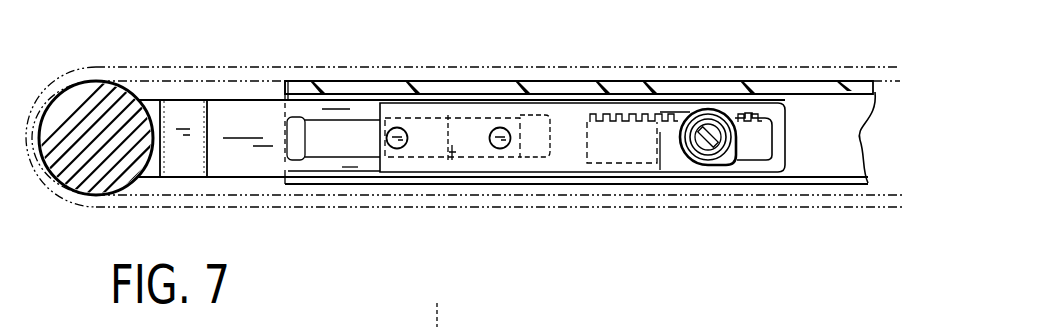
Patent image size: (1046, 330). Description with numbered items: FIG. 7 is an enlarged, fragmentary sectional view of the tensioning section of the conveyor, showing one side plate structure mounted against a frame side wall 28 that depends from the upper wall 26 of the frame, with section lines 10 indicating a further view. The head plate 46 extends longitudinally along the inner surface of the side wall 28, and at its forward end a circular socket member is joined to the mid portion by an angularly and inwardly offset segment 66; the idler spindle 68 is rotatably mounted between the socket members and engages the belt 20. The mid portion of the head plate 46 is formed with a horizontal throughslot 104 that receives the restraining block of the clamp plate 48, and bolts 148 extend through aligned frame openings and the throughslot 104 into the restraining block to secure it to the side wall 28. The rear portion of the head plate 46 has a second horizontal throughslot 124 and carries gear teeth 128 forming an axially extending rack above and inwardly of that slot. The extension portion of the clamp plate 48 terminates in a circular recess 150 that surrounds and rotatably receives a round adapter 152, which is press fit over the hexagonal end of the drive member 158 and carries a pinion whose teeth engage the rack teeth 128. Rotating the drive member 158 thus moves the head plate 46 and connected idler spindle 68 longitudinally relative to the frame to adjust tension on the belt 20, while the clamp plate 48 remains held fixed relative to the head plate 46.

The section line 10- 10 is at (428, 50).
The belt 20 is at (852, 65).
The upper wall 26 is at (777, 86).
The side wall 28 is at (845, 132).
The head plate 46 is at (320, 170).
The clamp plate 48 is at (568, 158).
The angularly and inwardly offset segment 66 is at (182, 114).
The idler spindle 68 is at (80, 104).
The horizontal throughslot 104 is at (315, 137).
The horizontal throughslot 124 is at (590, 95).
The gear teeth 128 is at (641, 82).
The bolts 148 is at (406, 131).
The circular recess 150 is at (703, 109).
The round adapter 152 is at (738, 147).
The drive member 158 is at (702, 150).